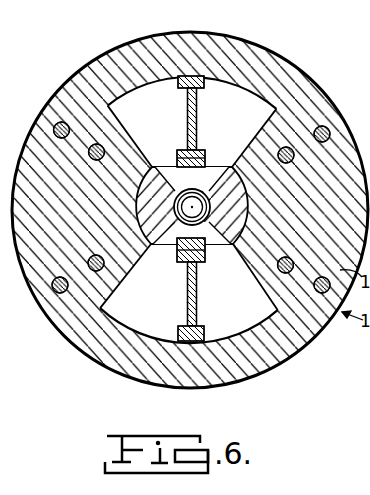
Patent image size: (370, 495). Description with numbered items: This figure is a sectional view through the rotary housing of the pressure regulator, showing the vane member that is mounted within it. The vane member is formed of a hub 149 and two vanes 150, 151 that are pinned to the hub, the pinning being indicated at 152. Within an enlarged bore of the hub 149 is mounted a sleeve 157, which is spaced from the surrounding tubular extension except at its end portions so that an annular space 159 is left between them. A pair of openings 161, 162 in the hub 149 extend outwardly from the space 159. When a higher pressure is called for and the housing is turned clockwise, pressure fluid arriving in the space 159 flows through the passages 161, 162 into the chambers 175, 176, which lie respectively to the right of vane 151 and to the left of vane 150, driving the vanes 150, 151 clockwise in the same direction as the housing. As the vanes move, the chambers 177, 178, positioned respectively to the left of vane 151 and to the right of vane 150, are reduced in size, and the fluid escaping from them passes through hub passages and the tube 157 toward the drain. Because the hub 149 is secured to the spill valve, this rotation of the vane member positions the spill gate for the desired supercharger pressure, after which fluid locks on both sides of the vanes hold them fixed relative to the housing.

The hub 149 is at (155, 238).
The vane 150 is at (196, 100).
The vane 151 is at (201, 322).
The pin 152 is at (207, 248).
The sleeve 157 is at (210, 253).
The annular space 159 is at (201, 216).
The opening 161 is at (167, 240).
The opening 162 is at (163, 166).
The chamber 175 is at (144, 97).
The chamber 176 is at (262, 310).
The chamber 177 is at (143, 315).
The chamber 178 is at (252, 98).